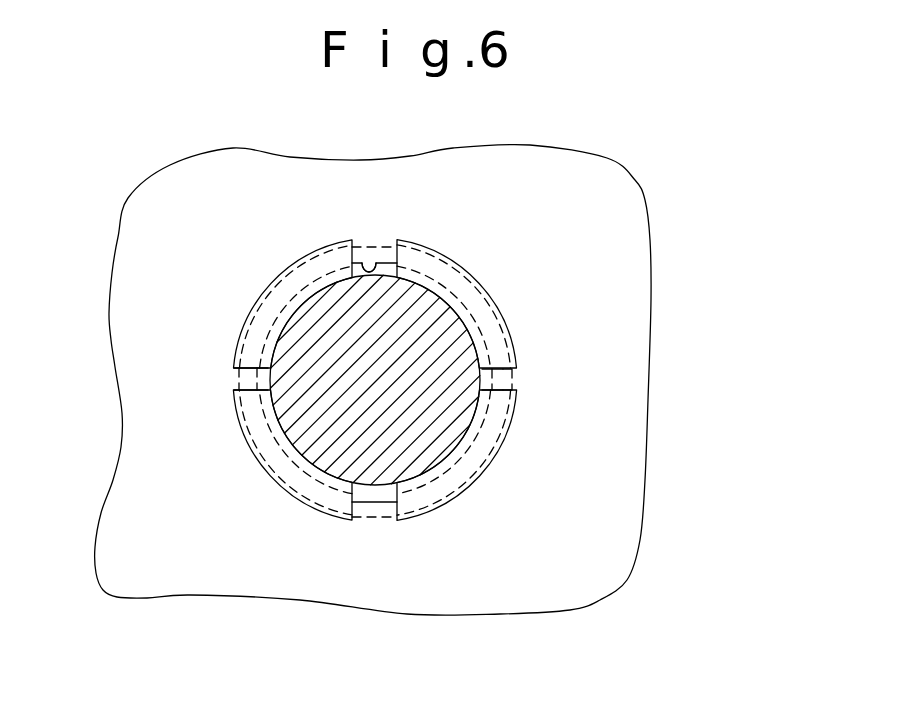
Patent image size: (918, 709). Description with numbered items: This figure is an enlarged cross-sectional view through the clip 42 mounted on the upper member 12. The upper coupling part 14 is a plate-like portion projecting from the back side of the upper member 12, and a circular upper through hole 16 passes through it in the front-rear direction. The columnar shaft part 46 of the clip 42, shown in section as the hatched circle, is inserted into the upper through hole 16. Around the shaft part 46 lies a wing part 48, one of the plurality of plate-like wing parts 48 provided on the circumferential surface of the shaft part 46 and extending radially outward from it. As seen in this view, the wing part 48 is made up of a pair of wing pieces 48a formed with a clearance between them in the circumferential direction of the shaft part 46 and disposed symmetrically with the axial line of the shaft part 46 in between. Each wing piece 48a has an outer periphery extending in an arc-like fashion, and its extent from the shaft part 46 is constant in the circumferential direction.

The upper member 12 is at (411, 374).
The upper coupling part 14 is at (623, 208).
The upper through hole 16 is at (370, 267).
The clip 42 is at (292, 503).
The shaft part 46 is at (430, 305).
The wing part 48 is at (515, 422).
The wing piece 48a is at (262, 295).